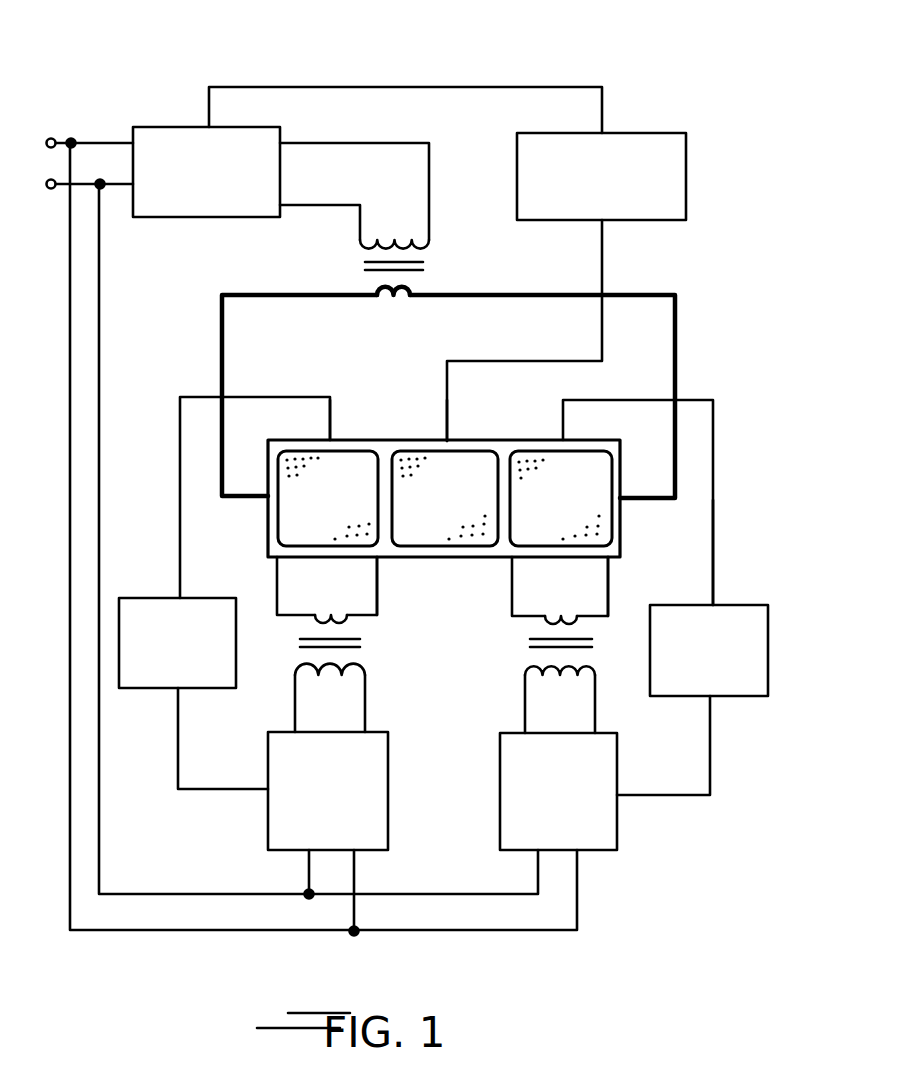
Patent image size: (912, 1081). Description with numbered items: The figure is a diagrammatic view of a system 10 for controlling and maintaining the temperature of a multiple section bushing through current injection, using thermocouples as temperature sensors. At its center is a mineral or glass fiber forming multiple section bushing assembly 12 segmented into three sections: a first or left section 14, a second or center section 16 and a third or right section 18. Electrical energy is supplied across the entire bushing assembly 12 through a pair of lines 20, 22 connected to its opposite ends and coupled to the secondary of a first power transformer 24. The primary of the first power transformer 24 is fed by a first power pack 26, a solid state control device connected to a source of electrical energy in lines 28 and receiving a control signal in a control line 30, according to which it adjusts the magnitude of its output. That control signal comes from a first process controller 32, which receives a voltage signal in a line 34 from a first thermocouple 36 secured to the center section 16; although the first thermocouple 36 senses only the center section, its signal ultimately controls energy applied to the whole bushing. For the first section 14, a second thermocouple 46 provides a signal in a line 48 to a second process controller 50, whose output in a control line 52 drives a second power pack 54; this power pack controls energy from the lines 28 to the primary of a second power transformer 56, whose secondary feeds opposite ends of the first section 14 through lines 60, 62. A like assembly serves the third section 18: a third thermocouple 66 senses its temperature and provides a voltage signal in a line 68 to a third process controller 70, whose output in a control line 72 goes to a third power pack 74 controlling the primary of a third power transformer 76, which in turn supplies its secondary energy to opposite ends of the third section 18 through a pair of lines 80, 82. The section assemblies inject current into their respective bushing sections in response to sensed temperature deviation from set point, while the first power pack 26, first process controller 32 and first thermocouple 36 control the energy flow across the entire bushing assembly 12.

The system 10 is at (600, 48).
The multiple section bushing assembly 12 is at (444, 437).
The first section 14 is at (313, 508).
The second section 16 is at (460, 516).
The third section 18 is at (577, 516).
The line 20 is at (222, 338).
The line 22 is at (675, 355).
The first power transformer 24 is at (436, 235).
The first power pack 26 is at (152, 190).
The lines 28 is at (70, 484).
The control line 30 is at (390, 87).
The first process controller 32 is at (617, 190).
The line 34 is at (505, 361).
The first thermocouple 36 is at (447, 440).
The second thermocouple 46 is at (335, 440).
The line 48 is at (180, 570).
The second process controller 50 is at (160, 659).
The control line 52 is at (214, 790).
The second power pack 54 is at (345, 813).
The second power transformer 56 is at (372, 622).
The line 60 is at (278, 598).
The line 62 is at (380, 596).
The third thermocouple 66 is at (563, 440).
The line 68 is at (713, 510).
The third process controller 70 is at (725, 664).
The control line 72 is at (712, 778).
The third power pack 74 is at (575, 813).
The third power transformer 76 is at (515, 625).
The line 80 is at (510, 577).
The line 82 is at (608, 598).